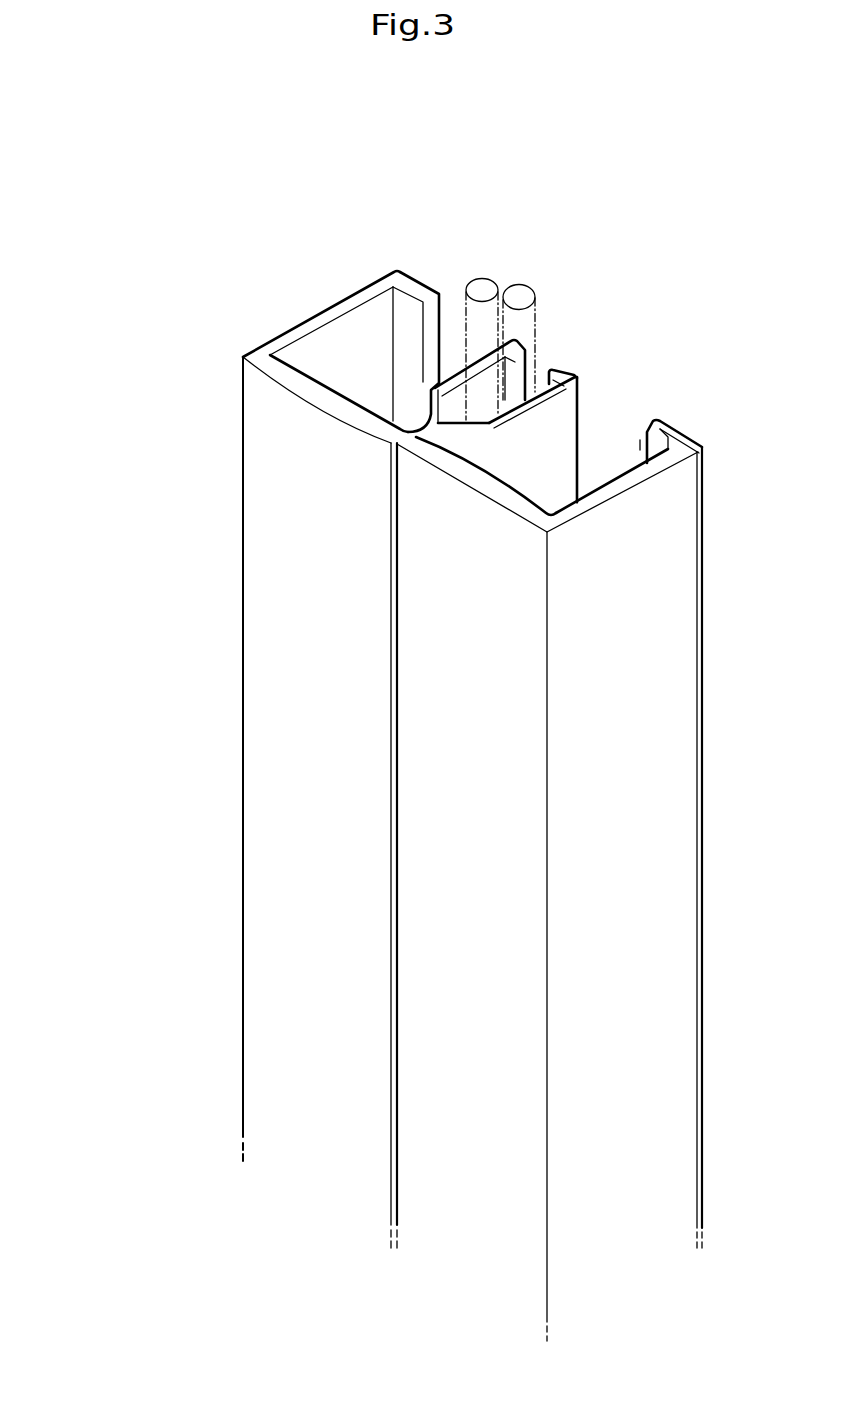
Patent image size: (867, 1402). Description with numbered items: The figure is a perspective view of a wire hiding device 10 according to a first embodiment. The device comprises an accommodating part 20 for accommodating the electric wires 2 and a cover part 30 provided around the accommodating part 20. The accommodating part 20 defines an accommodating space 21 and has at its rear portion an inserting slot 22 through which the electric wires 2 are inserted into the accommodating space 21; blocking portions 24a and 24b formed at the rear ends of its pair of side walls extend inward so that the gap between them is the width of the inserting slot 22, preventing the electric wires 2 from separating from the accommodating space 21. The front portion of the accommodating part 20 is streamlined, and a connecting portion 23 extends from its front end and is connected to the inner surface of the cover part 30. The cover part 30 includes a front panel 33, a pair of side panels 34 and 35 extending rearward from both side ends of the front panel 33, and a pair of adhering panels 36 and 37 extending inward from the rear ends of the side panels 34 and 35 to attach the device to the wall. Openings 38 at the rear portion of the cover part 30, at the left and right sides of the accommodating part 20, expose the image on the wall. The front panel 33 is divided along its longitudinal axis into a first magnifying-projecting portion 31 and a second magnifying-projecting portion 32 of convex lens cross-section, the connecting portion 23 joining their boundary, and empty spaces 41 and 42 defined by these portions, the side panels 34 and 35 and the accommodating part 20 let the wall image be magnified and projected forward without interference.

The electric wires 2 is at (497, 281).
The wire hiding device 10 is at (195, 491).
The accommodating part 20 is at (580, 402).
The accommodating space 21 is at (450, 418).
The inserting slot 22 is at (542, 363).
The connecting portion 23 is at (421, 425).
The blocking portion 24a is at (527, 347).
The blocking portion 24b is at (548, 373).
The cover part 30 is at (262, 352).
The first magnifying-projecting portion 31 is at (335, 409).
The second magnifying-projecting portion 32 is at (470, 481).
The front panel 33 is at (447, 578).
The side panel 34 is at (353, 300).
The side panel 35 is at (613, 487).
The adhering panel 36 is at (412, 288).
The adhering panel 37 is at (673, 435).
The openings 38 is at (449, 315).
The empty space 41 is at (341, 353).
The empty space 42 is at (547, 474).